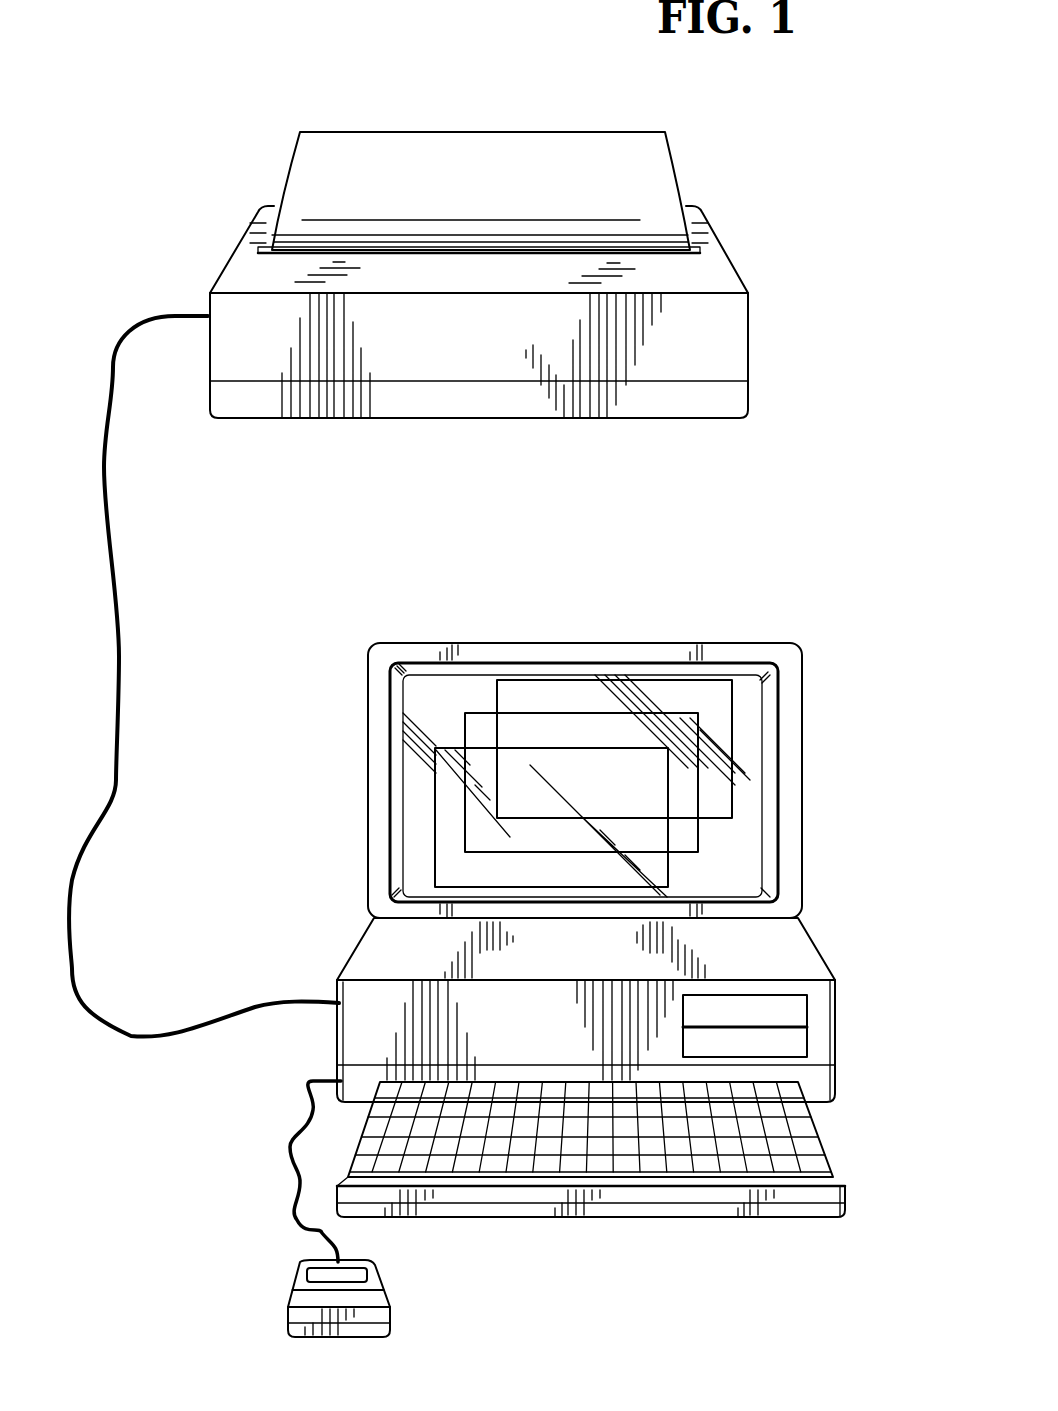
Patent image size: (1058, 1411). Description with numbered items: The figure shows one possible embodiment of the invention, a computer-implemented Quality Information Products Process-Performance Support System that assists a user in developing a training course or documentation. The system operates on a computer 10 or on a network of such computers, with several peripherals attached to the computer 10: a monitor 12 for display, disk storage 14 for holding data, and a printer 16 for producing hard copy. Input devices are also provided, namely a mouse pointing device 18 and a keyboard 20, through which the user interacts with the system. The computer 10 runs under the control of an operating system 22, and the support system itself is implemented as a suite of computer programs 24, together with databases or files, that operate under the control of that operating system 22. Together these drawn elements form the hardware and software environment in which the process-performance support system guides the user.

The work station 10 is at (375, 948).
The monitor 12 is at (738, 643).
The disk storage 14 is at (768, 1012).
The printer 16 is at (465, 405).
The mouse pointing device 18 is at (307, 1300).
The keyboard 20 is at (652, 1207).
The operating system 22 is at (457, 702).
The QIPP-PSS 24 is at (468, 834).